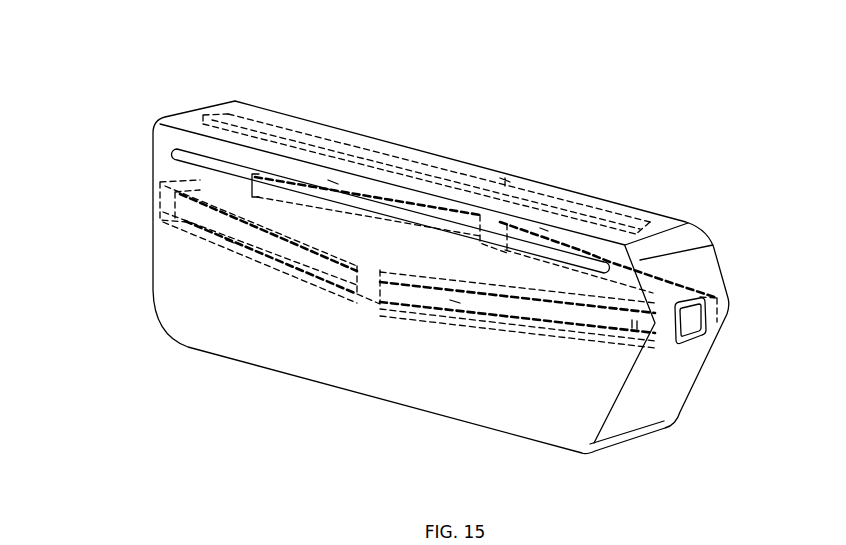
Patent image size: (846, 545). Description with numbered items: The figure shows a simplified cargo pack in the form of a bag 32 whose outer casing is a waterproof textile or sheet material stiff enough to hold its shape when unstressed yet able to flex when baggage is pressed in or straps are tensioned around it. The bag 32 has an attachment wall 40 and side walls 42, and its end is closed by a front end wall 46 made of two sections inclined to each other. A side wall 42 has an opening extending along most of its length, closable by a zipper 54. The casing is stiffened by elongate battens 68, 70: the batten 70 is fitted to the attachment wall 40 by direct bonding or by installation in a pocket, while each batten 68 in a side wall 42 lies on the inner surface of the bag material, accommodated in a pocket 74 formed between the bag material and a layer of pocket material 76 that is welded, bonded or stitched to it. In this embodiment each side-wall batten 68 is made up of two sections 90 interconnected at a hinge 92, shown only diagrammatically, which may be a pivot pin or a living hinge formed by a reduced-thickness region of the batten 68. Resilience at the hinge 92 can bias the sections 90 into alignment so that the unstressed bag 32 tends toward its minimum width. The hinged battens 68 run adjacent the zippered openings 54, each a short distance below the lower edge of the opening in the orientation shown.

The bag 32 is at (629, 118).
The attachment wall 40 is at (300, 123).
The side wall 42 is at (494, 393).
The front end wall 46 is at (670, 393).
The zipper 54 is at (603, 268).
The batten 68 is at (250, 183).
The batten 70 is at (469, 172).
The pocket 74 is at (175, 228).
The pocket material 76 is at (160, 191).
The section 90 is at (333, 182).
The hinge 92 is at (505, 180).